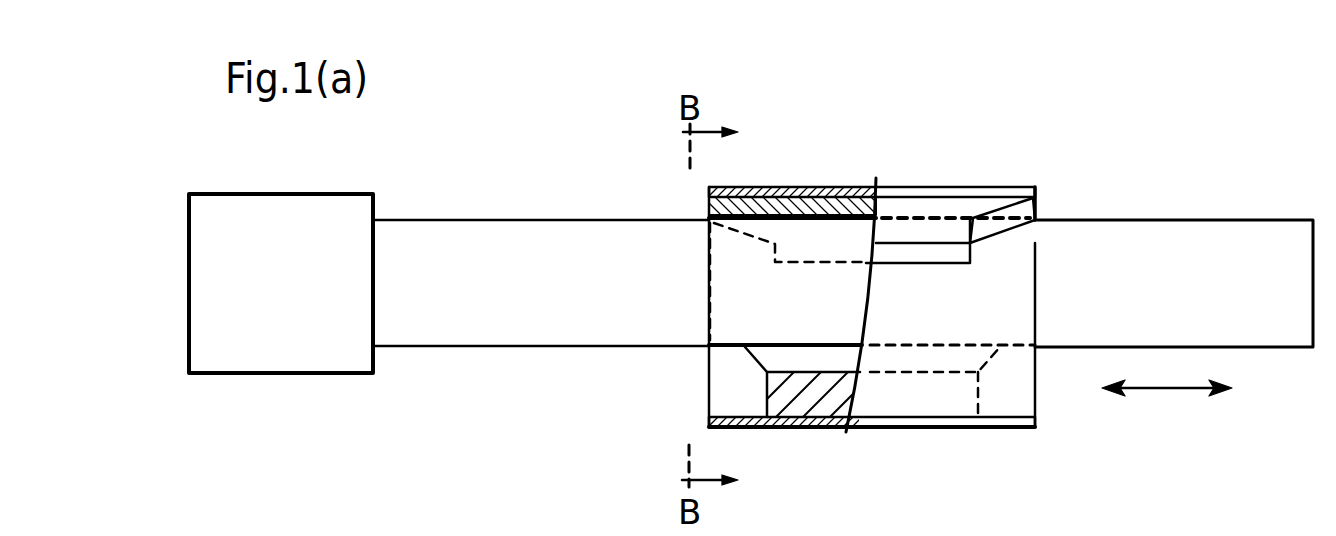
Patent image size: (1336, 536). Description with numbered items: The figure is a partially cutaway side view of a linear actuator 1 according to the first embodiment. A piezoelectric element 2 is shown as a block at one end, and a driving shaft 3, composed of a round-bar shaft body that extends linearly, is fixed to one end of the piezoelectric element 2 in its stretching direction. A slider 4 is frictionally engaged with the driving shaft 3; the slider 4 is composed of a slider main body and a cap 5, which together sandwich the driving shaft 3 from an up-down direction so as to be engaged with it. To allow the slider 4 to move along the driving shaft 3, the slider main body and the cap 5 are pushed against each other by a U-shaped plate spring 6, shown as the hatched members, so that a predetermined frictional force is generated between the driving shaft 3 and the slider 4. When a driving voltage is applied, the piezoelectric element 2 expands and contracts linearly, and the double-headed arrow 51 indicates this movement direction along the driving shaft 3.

The linear actuator 1 is at (629, 158).
The piezoelectric element 2 is at (279, 365).
The driving shaft 3 is at (1180, 247).
The slider 4 is at (890, 395).
The cap 5 is at (890, 207).
The U-shaped plate spring 6 is at (802, 188).
The sliding direction 51 is at (1168, 392).